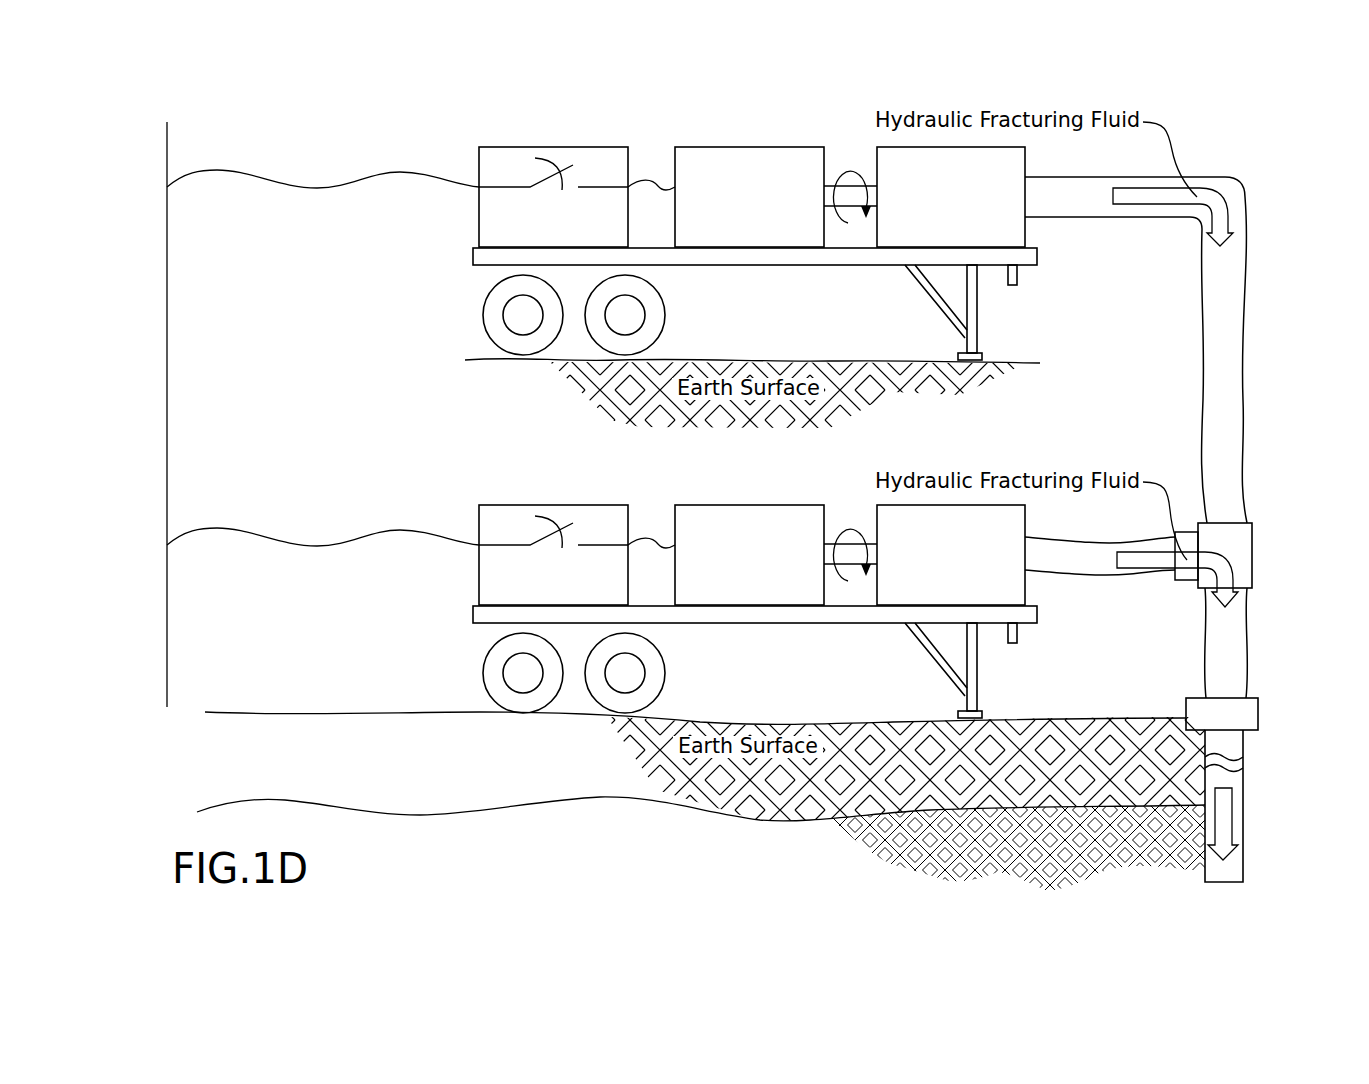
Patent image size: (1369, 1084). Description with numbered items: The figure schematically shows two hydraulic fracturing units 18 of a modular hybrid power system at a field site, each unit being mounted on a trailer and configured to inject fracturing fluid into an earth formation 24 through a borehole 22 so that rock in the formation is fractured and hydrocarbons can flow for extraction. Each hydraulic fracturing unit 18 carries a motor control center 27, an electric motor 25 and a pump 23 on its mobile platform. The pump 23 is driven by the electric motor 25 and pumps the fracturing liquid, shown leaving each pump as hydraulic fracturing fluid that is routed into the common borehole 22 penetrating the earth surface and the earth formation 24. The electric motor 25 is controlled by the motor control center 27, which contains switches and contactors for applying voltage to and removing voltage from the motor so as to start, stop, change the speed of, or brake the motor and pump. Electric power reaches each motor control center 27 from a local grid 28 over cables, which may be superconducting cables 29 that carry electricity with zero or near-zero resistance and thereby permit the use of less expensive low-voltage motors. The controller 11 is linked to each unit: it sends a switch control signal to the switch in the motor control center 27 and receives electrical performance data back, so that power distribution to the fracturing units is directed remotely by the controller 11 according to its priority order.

The hydraulic fracturing unit 18 is at (530, 138).
The superconducting cable 29 is at (370, 175).
The controller 11 is at (567, 150).
The motor control center 27 is at (593, 601).
The electric motor 25 is at (760, 581).
The pump 23 is at (987, 212).
The local grid 28 is at (167, 356).
The borehole 22 is at (1218, 743).
The earth formation 24 is at (1113, 852).